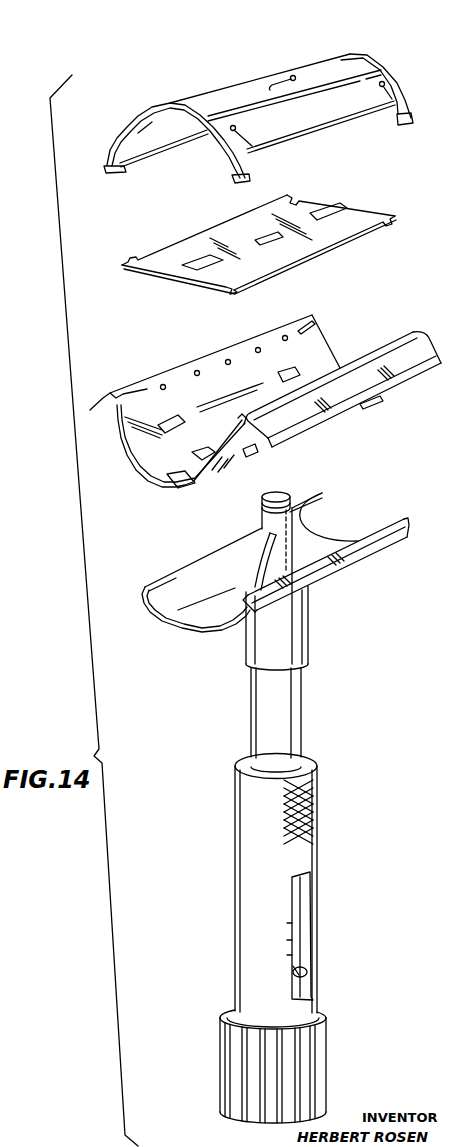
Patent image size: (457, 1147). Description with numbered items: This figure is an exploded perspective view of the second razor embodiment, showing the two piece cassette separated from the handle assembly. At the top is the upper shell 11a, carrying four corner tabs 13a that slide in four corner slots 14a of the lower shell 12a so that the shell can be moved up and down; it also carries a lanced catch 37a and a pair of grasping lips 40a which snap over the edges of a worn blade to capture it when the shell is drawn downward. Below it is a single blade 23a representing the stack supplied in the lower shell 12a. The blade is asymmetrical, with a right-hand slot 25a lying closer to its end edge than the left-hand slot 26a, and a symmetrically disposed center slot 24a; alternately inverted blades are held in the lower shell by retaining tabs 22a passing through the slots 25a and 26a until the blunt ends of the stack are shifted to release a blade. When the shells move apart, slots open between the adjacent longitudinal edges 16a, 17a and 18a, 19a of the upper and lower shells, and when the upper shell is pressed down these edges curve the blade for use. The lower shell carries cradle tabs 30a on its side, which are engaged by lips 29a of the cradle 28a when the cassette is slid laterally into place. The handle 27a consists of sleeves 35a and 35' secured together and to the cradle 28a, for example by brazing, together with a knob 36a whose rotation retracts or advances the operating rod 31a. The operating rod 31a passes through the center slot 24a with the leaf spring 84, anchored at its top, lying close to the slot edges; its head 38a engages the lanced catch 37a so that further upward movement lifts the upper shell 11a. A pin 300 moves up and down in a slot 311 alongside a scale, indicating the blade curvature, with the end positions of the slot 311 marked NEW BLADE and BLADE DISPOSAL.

The upper shell 11a is at (350, 63).
The lower shell 12a is at (133, 447).
The corner tabs 13a is at (108, 158).
The corner slots 14a is at (130, 393).
The longitudinal edge 16a is at (353, 118).
The longitudinal edge 17a is at (388, 343).
The longitudinal edge 18a is at (160, 150).
The longitudinal edge 19a is at (178, 367).
The retaining tabs 22a is at (190, 450).
The blade 23a is at (348, 250).
The center slot 24a is at (273, 242).
The slot 25a is at (340, 210).
The slot 26a is at (183, 265).
The handle 27a is at (340, 770).
The cradle 28a is at (188, 632).
The lips 29a is at (325, 493).
The cradle tabs 30a is at (372, 402).
The operating rod 31a is at (322, 515).
The sleeve 35a is at (301, 697).
The sleeve 35' is at (295, 589).
The knob 36a is at (324, 1041).
The lanced catch 37a is at (292, 77).
The head 38a is at (280, 496).
The grasping lips 40a is at (195, 136).
The leaf spring 84 is at (256, 568).
The pin 300 is at (309, 971).
The slot 311 is at (297, 921).